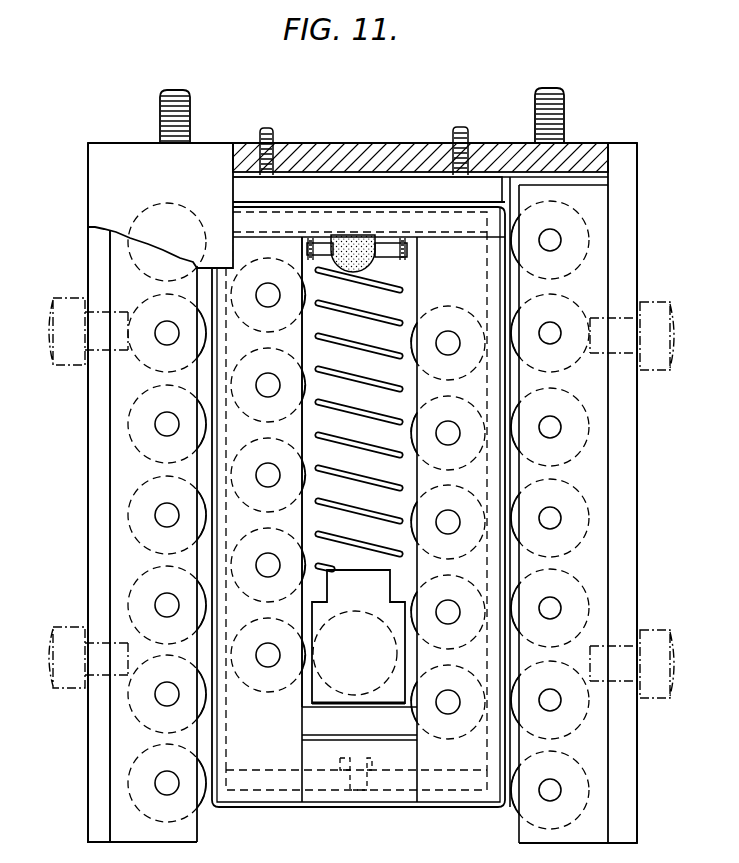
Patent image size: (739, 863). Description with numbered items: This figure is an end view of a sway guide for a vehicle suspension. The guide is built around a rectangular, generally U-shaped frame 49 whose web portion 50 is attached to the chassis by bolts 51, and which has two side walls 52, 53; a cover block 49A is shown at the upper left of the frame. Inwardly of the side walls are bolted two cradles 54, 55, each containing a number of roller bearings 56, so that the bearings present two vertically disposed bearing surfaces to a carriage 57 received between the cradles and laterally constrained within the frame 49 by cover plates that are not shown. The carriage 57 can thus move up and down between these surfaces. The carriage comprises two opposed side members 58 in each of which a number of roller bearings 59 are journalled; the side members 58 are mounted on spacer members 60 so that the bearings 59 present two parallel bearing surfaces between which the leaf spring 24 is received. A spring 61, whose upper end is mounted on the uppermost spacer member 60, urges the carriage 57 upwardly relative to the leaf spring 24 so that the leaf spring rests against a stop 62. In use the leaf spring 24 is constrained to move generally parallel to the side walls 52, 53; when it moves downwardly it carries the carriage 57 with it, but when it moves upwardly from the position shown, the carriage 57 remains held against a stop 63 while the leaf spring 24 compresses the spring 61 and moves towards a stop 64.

The leaf spring 24 is at (366, 612).
The frame 49 is at (85, 482).
The cover block 49A is at (117, 147).
The web portion 50 is at (291, 143).
The bolts 51 is at (167, 88).
The side wall 52 is at (92, 386).
The side wall 53 is at (627, 452).
The cradle 54 is at (125, 283).
The cradle 55 is at (598, 273).
The roller bearings 56 is at (128, 258).
The carriage 57 is at (355, 793).
The side members 58 is at (252, 798).
The roller bearings 59 is at (240, 262).
The spacer members 60 is at (355, 212).
The spring 61 is at (300, 307).
The stop 62 is at (322, 725).
The stop 63 is at (400, 187).
The stop 64 is at (377, 272).